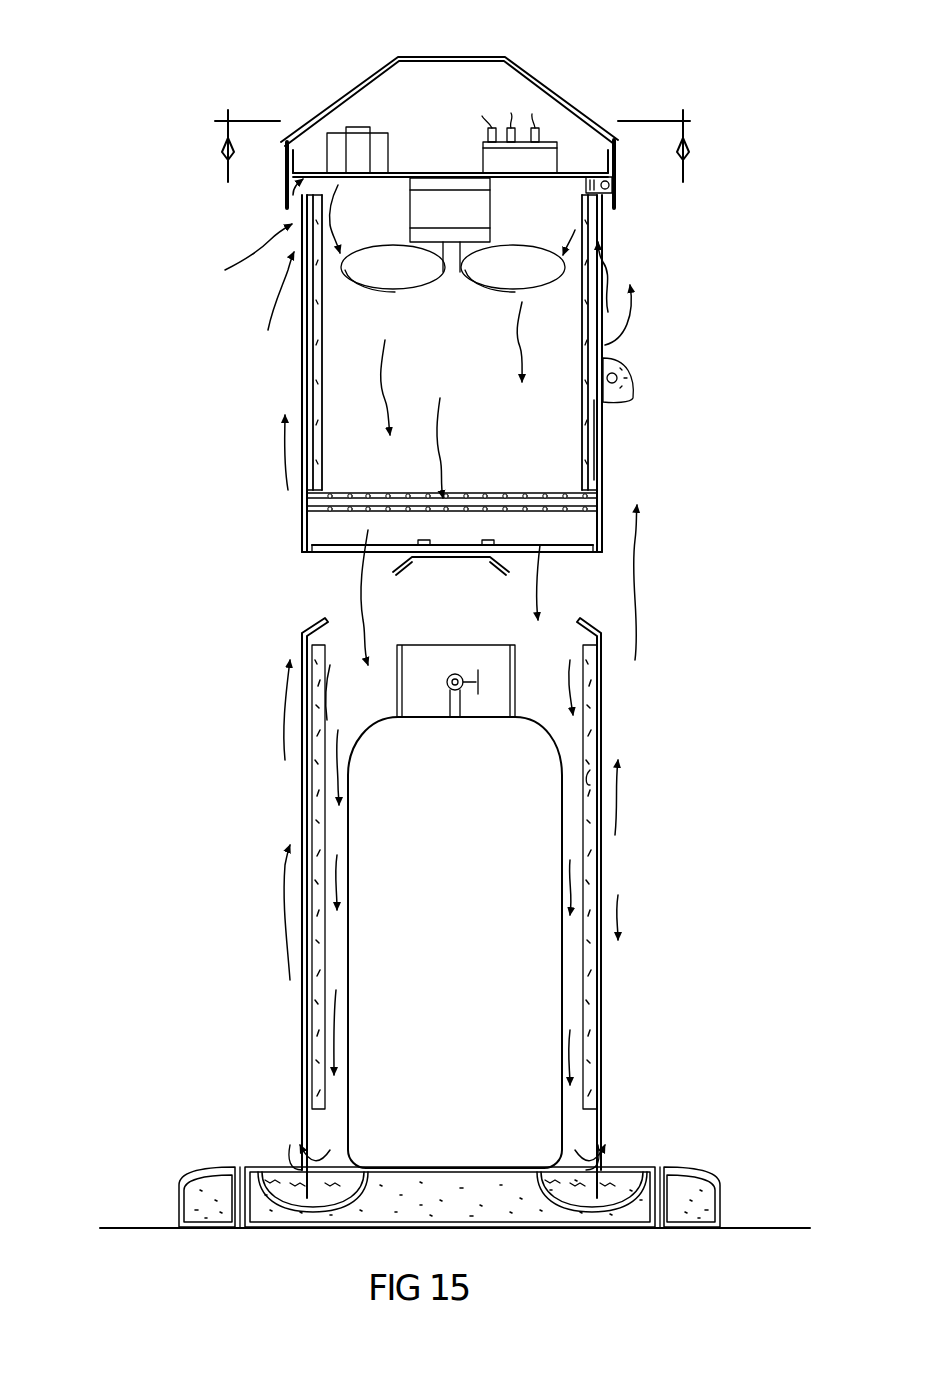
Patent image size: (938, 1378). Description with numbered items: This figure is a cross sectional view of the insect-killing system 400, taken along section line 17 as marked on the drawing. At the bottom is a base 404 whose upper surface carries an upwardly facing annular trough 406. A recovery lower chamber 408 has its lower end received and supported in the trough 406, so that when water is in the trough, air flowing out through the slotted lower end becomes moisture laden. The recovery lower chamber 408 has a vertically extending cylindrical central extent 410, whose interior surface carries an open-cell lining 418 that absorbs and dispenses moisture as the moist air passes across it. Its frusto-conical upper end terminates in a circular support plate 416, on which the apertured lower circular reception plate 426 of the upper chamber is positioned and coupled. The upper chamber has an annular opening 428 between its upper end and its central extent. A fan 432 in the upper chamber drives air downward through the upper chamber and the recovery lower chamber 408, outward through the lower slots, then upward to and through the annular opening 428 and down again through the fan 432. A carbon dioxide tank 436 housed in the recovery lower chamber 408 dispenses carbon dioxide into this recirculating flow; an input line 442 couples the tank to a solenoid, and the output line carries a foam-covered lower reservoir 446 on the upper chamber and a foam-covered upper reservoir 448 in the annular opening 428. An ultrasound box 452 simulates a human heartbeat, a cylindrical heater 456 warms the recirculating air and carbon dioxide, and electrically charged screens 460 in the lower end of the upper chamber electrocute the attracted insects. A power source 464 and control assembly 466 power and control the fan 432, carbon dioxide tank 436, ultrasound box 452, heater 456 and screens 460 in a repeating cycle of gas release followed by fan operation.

The section line 17- 17 is at (453, 129).
The heater assembly 400 is at (688, 600).
The base 404 is at (700, 1189).
The trough 406 is at (620, 1157).
The recovery lower chamber 408 is at (605, 723).
The central extent 410 is at (305, 831).
The circular support plate 416 is at (449, 577).
The open-cell lining 418 is at (580, 785).
The lower circular reception plate 426 is at (325, 562).
The annular opening 428 is at (615, 215).
The fan 432 is at (500, 285).
The carbon dioxide tank 436 is at (455, 906).
The input line 442 is at (304, 342).
The lower reservoir 446 is at (628, 400).
The upper reservoir 448 is at (610, 185).
The ultrasound box 452 is at (375, 195).
The cylindrical heater 456 is at (601, 452).
The electrically charged screens 460 is at (348, 509).
The power source 464 is at (363, 128).
The control assembly 466 is at (548, 150).